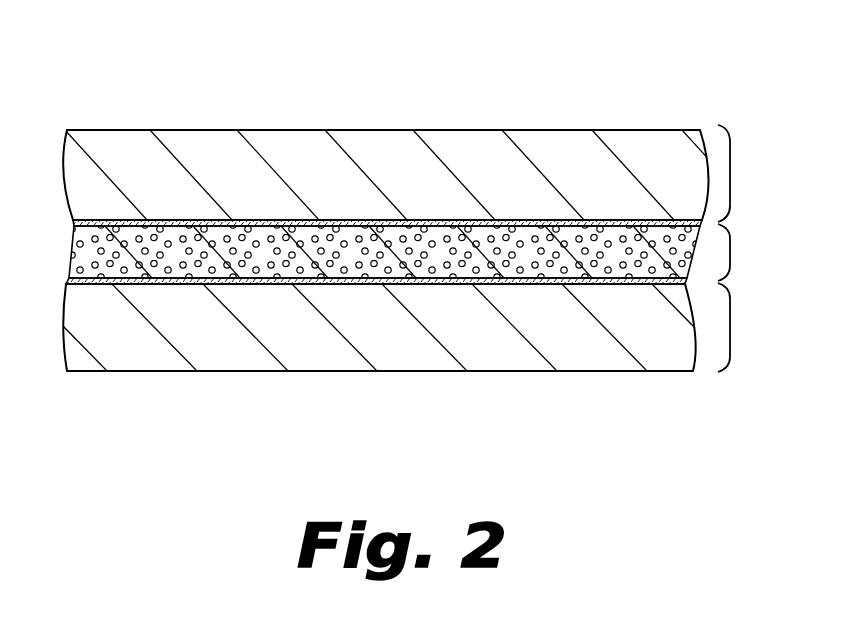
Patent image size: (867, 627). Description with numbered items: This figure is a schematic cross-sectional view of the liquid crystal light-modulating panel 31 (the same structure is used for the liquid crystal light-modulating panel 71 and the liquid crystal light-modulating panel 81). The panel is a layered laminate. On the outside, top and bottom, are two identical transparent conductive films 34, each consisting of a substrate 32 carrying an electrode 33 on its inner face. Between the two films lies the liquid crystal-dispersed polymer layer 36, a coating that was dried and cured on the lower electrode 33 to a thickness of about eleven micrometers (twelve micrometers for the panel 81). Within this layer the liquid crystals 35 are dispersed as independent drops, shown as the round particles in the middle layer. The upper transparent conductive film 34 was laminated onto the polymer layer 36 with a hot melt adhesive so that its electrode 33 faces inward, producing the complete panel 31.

The liquid crystal light-modulating panel 31 is at (399, 226).
The liquid crystal light-modulating panel 71 is at (399, 226).
The liquid crystal light-modulating panel 81 is at (375, 38).
The substrate 32 is at (115, 146).
The electrode 33 is at (190, 131).
The transparent conductive film 34 is at (749, 248).
The liquid crystals 35 is at (447, 226).
The liquid crystal-dispersed polymer layer 36 is at (749, 252).